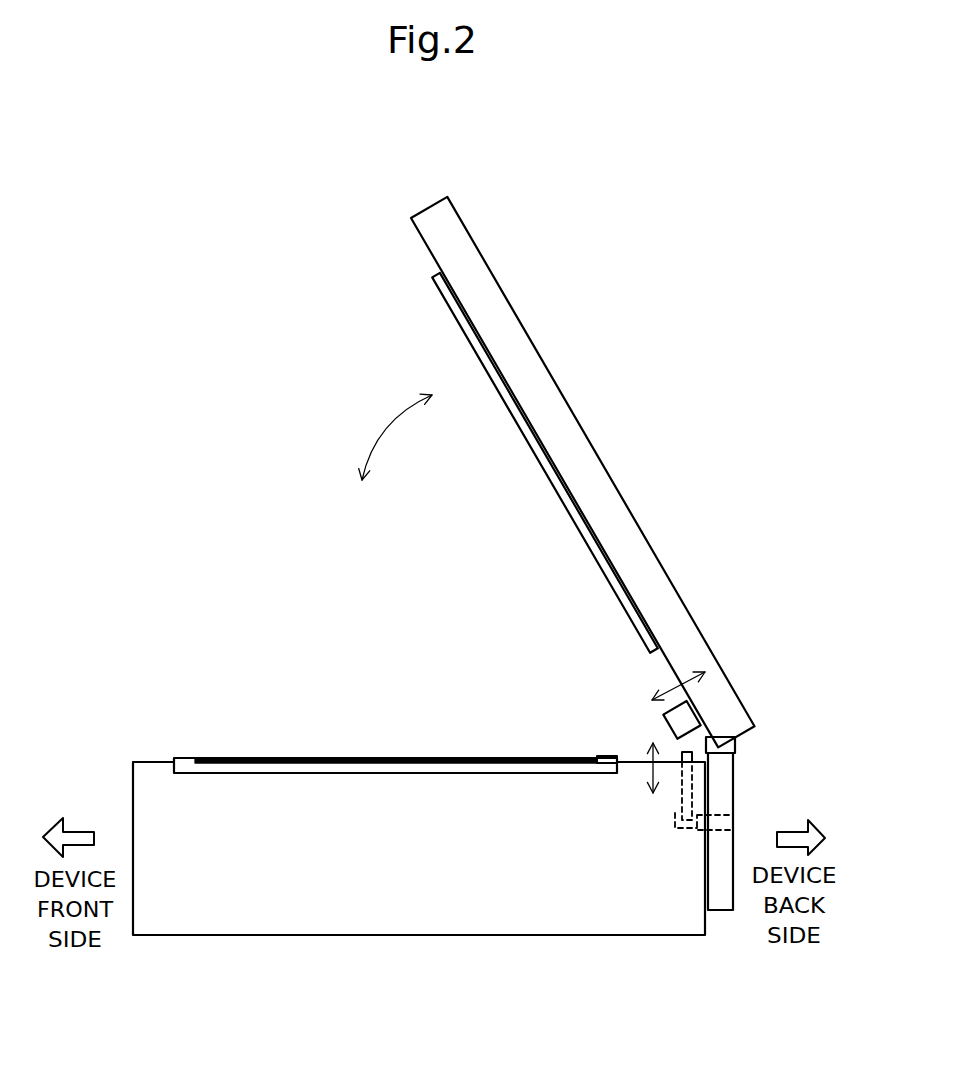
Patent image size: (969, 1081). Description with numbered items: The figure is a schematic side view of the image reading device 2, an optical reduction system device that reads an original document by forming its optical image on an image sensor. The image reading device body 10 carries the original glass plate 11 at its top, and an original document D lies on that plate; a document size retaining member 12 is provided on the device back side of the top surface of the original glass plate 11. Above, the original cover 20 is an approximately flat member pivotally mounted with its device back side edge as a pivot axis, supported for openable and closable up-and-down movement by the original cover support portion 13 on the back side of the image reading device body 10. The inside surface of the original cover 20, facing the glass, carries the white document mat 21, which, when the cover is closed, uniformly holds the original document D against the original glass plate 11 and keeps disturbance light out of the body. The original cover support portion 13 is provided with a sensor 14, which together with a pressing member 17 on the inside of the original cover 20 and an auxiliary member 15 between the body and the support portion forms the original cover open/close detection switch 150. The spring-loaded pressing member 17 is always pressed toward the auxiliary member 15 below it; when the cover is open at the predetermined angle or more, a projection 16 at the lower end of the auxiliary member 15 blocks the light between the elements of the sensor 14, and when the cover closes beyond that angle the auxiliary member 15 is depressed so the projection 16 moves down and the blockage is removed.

The image reading device 2 is at (594, 472).
The original cover 20 is at (598, 447).
The document mat 21 is at (550, 487).
The pressing member 17 is at (688, 717).
The original cover open/close detection switch 150 is at (629, 688).
The image reading device body 10 is at (348, 935).
The original glass plate 11 is at (180, 758).
The original document D is at (375, 758).
The document size retaining member 12 is at (597, 757).
The auxiliary member 15 is at (678, 757).
The sensor 14 is at (723, 813).
The projection 16 is at (687, 830).
The original cover support portion 13 is at (725, 910).